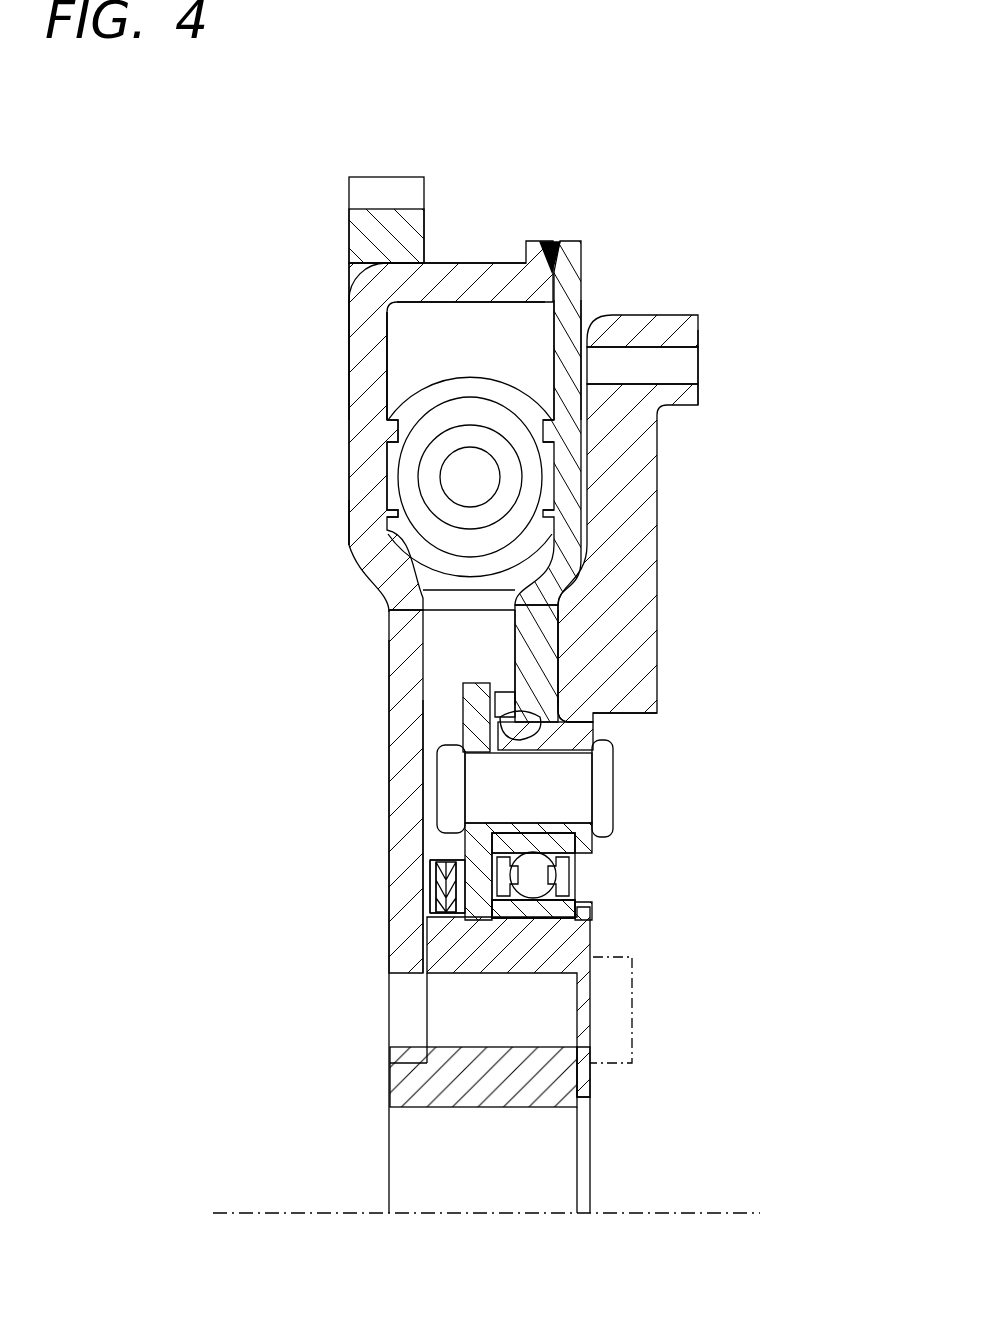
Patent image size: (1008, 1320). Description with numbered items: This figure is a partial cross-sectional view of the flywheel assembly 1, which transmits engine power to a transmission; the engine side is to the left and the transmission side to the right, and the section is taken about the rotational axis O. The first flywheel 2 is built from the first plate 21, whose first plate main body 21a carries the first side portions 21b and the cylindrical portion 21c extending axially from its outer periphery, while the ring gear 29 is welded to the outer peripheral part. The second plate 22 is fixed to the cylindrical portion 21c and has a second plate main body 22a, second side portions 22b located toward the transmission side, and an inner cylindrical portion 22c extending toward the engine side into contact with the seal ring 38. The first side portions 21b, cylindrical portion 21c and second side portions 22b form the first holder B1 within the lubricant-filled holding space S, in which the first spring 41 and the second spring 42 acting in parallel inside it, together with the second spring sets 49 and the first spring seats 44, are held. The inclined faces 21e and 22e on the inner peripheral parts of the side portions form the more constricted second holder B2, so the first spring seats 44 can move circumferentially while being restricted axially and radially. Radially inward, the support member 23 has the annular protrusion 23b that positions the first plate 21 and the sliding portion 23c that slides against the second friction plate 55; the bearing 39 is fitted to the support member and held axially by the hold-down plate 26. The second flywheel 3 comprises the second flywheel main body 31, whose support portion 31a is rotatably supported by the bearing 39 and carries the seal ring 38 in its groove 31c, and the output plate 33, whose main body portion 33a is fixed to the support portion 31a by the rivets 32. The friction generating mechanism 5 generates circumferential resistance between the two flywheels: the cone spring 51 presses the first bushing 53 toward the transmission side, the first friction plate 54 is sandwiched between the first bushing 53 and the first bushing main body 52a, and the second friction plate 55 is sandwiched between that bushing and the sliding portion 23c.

The flywheel assembly 1 is at (778, 208).
The first flywheel 2 is at (330, 292).
The second flywheel 3 is at (724, 315).
The friction generating mechanism 5 is at (445, 895).
The first plate 21 is at (362, 595).
The first plate main body 21a is at (405, 775).
The first side portions 21b is at (365, 380).
The cylindrical portion 21c is at (468, 275).
The inclined face 21e is at (395, 535).
The second plate 22 is at (584, 458).
The second plate main body 22a is at (530, 632).
The second side portions 22b is at (562, 497).
The inner cylindrical portion 22c is at (548, 700).
The inclined face 22e is at (566, 545).
The support member 23 is at (428, 940).
The annular protrusion 23b is at (408, 1090).
The sliding portion 23c is at (592, 905).
The hold-down plate 26 is at (582, 1082).
The ring gear 29 is at (360, 238).
The second flywheel main body 31 is at (712, 398).
The support portion 31a is at (572, 830).
The groove 31c is at (520, 745).
The rivets 32 is at (558, 787).
The output plate 33 is at (460, 690).
The main body portion 33a is at (475, 710).
The seal ring 38 is at (588, 740).
The bearing 39 is at (585, 876).
The first spring 41 is at (415, 445).
The second spring 42 is at (432, 468).
The first spring seats 44 is at (386, 350).
The second spring sets 49 is at (386, 490).
The cone spring 51 is at (438, 882).
The first bushing main body 52a is at (458, 843).
The first bushing 53 is at (445, 920).
The first friction plate 54 is at (430, 865).
The second friction plate 55 is at (482, 907).
The first holder B1 is at (336, 518).
The second holder B2 is at (376, 660).
The holding space S is at (552, 330).
The axis O is at (470, 1219).